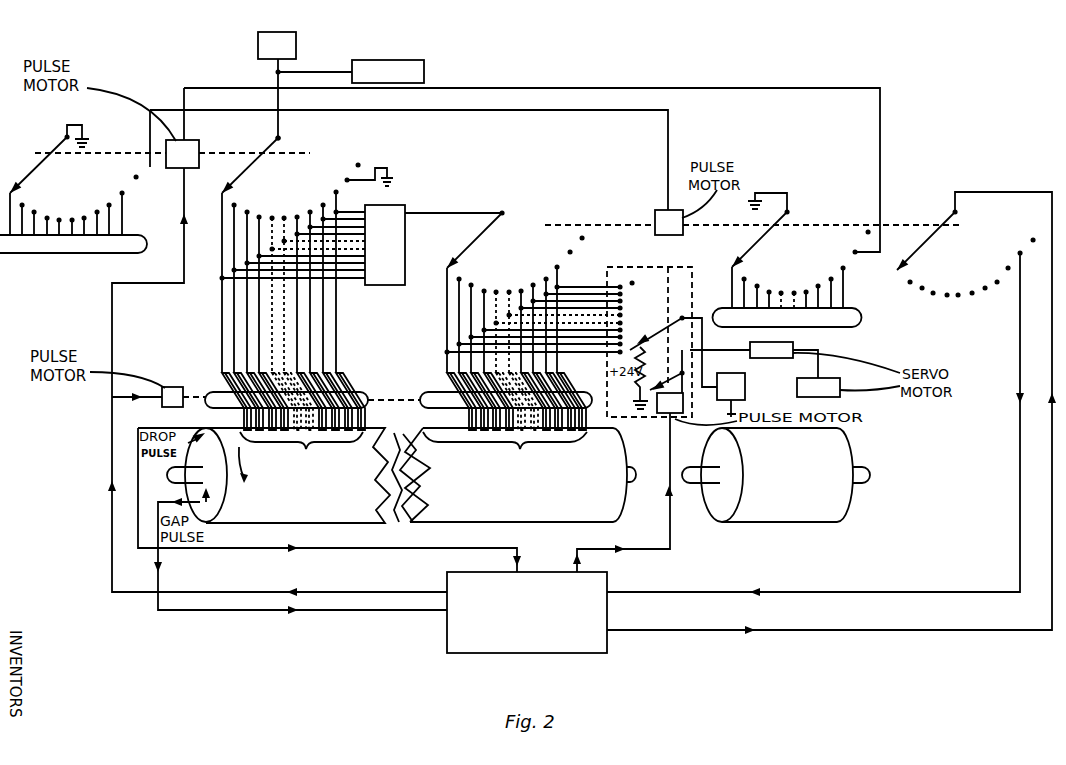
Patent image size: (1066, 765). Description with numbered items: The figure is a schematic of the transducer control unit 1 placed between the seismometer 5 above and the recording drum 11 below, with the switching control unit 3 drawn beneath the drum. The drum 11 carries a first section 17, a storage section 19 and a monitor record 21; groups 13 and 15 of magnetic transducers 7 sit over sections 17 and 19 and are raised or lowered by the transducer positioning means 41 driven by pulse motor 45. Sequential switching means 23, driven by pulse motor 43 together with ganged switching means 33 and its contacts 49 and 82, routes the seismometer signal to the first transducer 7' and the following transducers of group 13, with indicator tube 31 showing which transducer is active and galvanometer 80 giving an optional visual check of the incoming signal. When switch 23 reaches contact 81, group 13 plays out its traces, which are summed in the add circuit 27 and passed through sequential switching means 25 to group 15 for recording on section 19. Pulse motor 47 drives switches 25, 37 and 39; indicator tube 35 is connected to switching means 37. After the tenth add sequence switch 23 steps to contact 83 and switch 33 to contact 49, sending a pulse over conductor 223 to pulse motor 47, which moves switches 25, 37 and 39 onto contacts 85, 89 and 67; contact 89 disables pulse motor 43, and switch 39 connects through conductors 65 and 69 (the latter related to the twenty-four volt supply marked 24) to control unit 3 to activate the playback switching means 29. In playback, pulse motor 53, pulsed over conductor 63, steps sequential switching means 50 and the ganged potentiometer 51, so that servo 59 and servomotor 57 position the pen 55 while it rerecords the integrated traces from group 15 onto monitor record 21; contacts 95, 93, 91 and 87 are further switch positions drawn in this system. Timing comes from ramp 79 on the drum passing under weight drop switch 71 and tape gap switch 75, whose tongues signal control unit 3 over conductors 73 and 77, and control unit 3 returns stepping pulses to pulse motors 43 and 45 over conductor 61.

The seismometer 5 is at (297, 40).
The galvanometer 80 is at (392, 60).
The conductor 223 is at (560, 108).
The pulse motor 43 is at (197, 142).
The contact 49 is at (150, 167).
The contact 82 is at (136, 179).
The sequential switching means 33 is at (59, 146).
The indicator tube 31 is at (73, 234).
The sequential switching means 23 is at (288, 126).
The contact 81 is at (347, 178).
The contact 83 is at (360, 162).
The add circuit 27 is at (400, 206).
The sequential switching means 25 is at (510, 198).
The contact 87 is at (584, 237).
The contact 85 is at (569, 252).
The pulse motor 47 is at (655, 212).
The sequential switching means 37 is at (789, 211).
The contact 91 is at (866, 231).
The contact 89 is at (857, 240).
The sequential switching means 39 is at (953, 212).
The conductor 24 is at (1005, 287).
The contact 93 is at (1033, 240).
The contact 67 is at (1030, 252).
The conductor 65 is at (846, 590).
The conductor 69 is at (846, 628).
The playback switching means 29 is at (672, 268).
The contact 95 is at (641, 279).
The sequential switching means 50 is at (683, 316).
The potentiometer 51 is at (681, 371).
The pulse motor 53 is at (683, 407).
The visible recording transducer 55 is at (740, 373).
The servo 59 is at (790, 343).
The servomotor 57 is at (840, 380).
The indicator tube 35 is at (853, 327).
The pulse motor 45 is at (183, 387).
The magnetic transducer 7 is at (398, 401).
The magnetic transducer 7' is at (224, 393).
The transducer positioning means 41 is at (408, 392).
The transducer control unit 1 is at (396, 348).
The section 17 is at (284, 475).
The transducer group 13 is at (301, 451).
The storage section 19 is at (518, 475).
The transducer group 15 is at (505, 449).
The monitor record 21 is at (776, 475).
The recording drum 11 is at (530, 546).
The ramp 79 is at (190, 440).
The weight drop switch 71 is at (210, 447).
The tape gap switch 75 is at (225, 485).
The switching control unit 3 is at (527, 612).
The conductor 73 is at (364, 548).
The conductor 77 is at (362, 610).
The conductor 61 is at (362, 591).
The conductor 63 is at (670, 547).